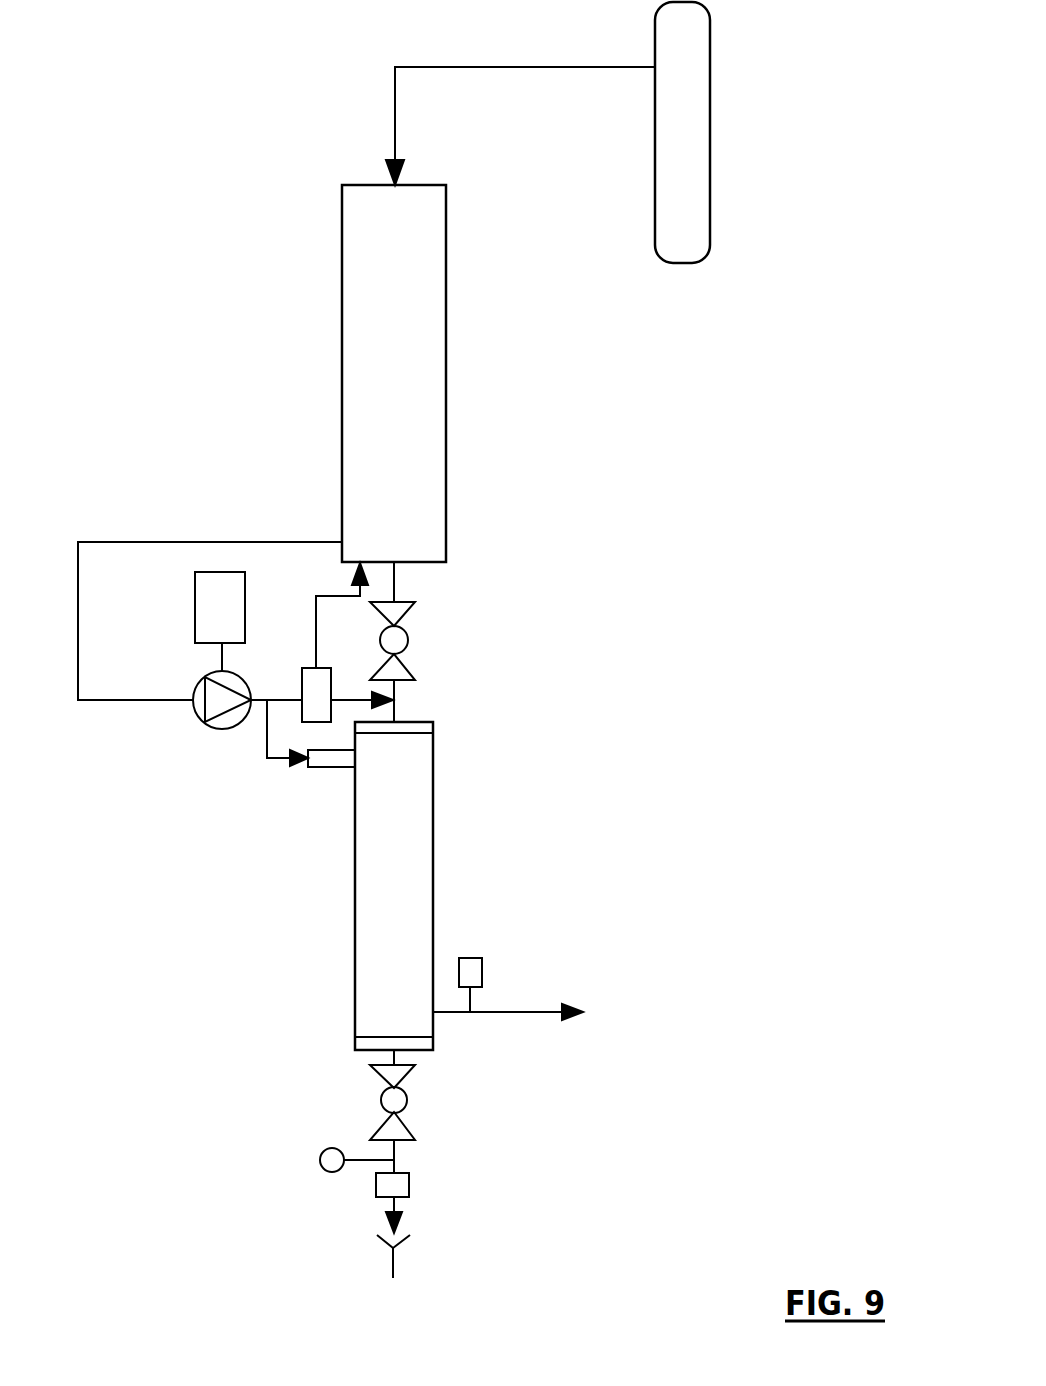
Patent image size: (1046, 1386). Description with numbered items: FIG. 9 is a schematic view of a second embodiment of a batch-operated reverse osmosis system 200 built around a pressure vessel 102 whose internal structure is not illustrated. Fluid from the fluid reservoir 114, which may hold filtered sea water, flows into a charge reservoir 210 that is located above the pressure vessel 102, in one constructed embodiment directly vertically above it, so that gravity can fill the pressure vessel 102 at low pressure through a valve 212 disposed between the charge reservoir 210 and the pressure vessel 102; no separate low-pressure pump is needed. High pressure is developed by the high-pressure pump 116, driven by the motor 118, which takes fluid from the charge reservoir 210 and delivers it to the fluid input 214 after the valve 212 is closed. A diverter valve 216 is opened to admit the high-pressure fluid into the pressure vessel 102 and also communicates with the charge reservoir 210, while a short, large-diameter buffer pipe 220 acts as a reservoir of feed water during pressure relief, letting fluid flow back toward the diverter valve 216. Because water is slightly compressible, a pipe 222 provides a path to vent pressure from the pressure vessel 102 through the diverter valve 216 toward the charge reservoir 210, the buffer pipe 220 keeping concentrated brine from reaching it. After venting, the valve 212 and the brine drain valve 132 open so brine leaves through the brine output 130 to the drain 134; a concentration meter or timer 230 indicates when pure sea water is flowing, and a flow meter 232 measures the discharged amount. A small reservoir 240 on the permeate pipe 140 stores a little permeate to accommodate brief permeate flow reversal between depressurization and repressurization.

The reverse osmosis system 200 is at (119, 168).
The fluid reservoir 114 is at (710, 135).
The charge reservoir 210 is at (447, 330).
The motor 118 is at (210, 598).
The high-pressure pump 116 is at (195, 705).
The diverter valve 216 is at (308, 683).
The valve 212 is at (408, 626).
The fluid input 214 is at (397, 705).
The pressure vessel 102 is at (433, 850).
The pipe 222 is at (267, 750).
The buffer pipe 220 is at (333, 768).
The small reservoir 240 is at (482, 972).
The permeate pipe 140 is at (513, 1012).
The brine output 130 is at (393, 1055).
The brine drain valve 132 is at (405, 1120).
The concentration meter or timer 230 is at (328, 1171).
The flow meter 232 is at (410, 1192).
The drain 134 is at (402, 1250).